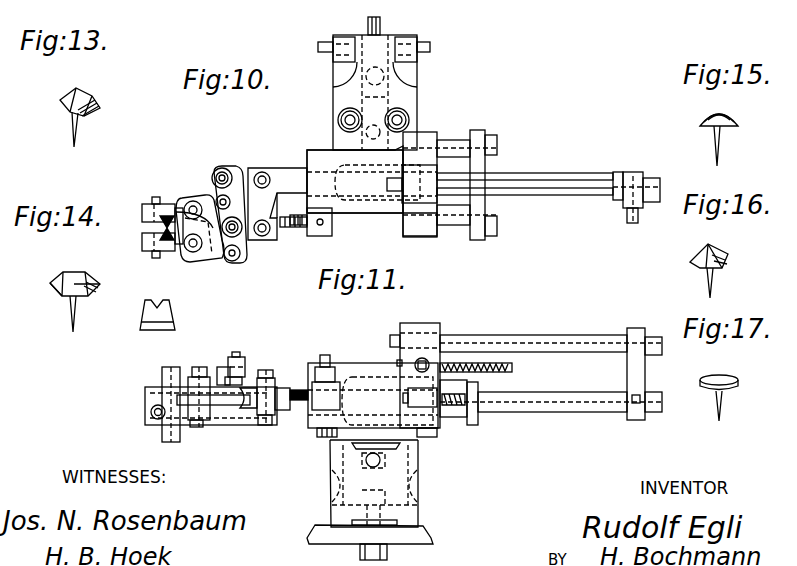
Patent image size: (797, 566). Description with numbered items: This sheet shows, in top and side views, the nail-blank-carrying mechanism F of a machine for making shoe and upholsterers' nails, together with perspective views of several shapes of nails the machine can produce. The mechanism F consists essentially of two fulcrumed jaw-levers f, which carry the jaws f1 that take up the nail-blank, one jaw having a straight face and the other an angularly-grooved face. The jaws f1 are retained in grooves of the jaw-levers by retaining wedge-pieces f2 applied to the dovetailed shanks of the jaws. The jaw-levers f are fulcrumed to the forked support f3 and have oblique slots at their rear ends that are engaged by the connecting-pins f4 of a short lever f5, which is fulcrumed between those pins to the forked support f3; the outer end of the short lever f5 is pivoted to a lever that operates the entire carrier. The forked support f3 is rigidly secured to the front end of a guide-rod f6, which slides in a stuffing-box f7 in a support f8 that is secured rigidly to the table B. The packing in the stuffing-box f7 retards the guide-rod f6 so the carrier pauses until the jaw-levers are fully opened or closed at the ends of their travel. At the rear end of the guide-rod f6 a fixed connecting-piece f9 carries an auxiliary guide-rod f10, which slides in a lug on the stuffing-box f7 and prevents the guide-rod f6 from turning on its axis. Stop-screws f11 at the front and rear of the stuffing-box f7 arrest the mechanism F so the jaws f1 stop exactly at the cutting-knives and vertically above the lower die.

In FIG. 10, the nail-blank-carrying mechanism F is at (181, 210).
In FIG. 11, the nail-blank-carrying mechanism F is at (211, 417).
In FIG. 11, the table B is at (383, 540).
In FIG. 10, the jaw-levers f is at (177, 232).
In FIG. 11, the jaw-levers f is at (189, 397).
In FIG. 10, the jaws f1 is at (172, 228).
In FIG. 11, the jaws f1 is at (164, 371).
In FIG. 10, the retaining wedge-pieces f2 is at (152, 228).
In FIG. 11, the retaining wedge-pieces f2 is at (144, 417).
In FIG. 10, the forked support f3 is at (194, 224).
In FIG. 11, the forked support f3 is at (247, 410).
In FIG. 10, the connecting-pins f4 is at (228, 172).
In FIG. 11, the connecting-pins f4 is at (228, 367).
In FIG. 10, the short lever f5 is at (277, 204).
In FIG. 11, the short lever f5 is at (242, 386).
In FIG. 10, the guide-rod f6 is at (508, 185).
In FIG. 11, the guide-rod f6 is at (526, 380).
In FIG. 10, the stuffing-box f7 is at (372, 191).
In FIG. 11, the stuffing-box f7 is at (373, 396).
In FIG. 10, the support f8 is at (365, 129).
In FIG. 11, the support f8 is at (367, 483).
In FIG. 10, the fixed connecting-piece f9 is at (636, 186).
In FIG. 11, the fixed connecting-piece f9 is at (630, 374).
In FIG. 10, the auxiliary guide-rod f10 is at (562, 188).
In FIG. 11, the auxiliary guide-rod f10 is at (551, 334).
In FIG. 11, the stop-screws f11 is at (494, 373).